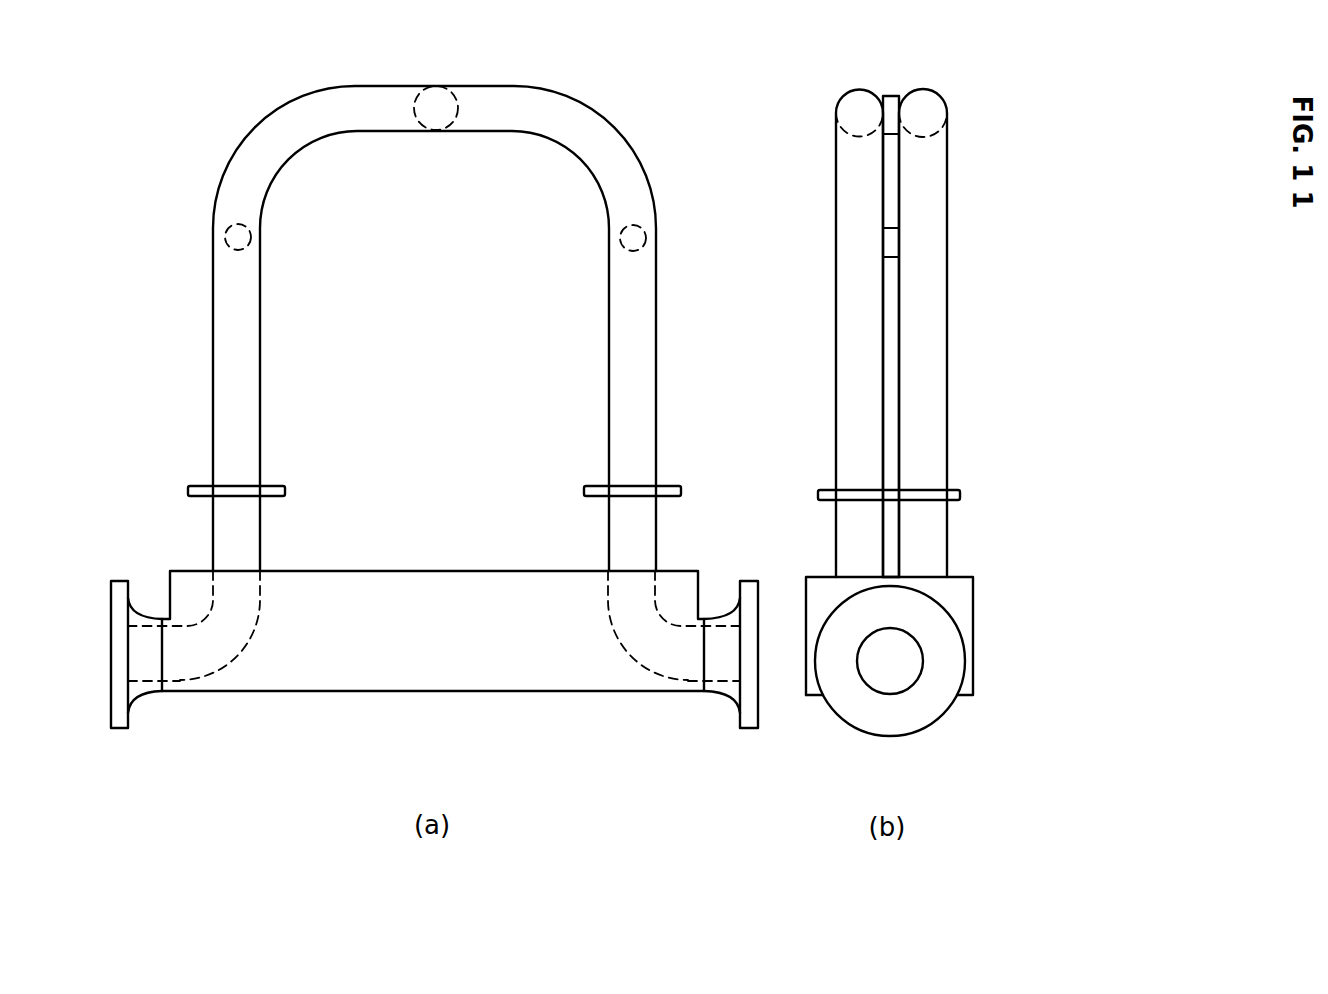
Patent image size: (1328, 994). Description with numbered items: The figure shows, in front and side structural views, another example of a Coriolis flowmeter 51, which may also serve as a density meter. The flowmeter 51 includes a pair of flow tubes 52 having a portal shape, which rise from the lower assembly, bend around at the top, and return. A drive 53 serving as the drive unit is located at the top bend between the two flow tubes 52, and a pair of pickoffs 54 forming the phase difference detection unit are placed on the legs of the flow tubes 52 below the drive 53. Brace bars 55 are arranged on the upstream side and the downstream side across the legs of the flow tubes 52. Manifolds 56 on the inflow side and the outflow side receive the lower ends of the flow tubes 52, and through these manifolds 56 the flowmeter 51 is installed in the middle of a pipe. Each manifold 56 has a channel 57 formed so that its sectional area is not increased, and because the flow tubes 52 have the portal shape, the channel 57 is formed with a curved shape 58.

The Coriolis flowmeter 51 is at (197, 228).
The flow tubes 52 is at (222, 342).
The drive 53 is at (436, 131).
The pickoffs 54 is at (247, 253).
The brace bars 55 is at (203, 486).
The manifolds 56 is at (190, 692).
The channel 57 is at (232, 627).
The curved shape 58 is at (237, 662).